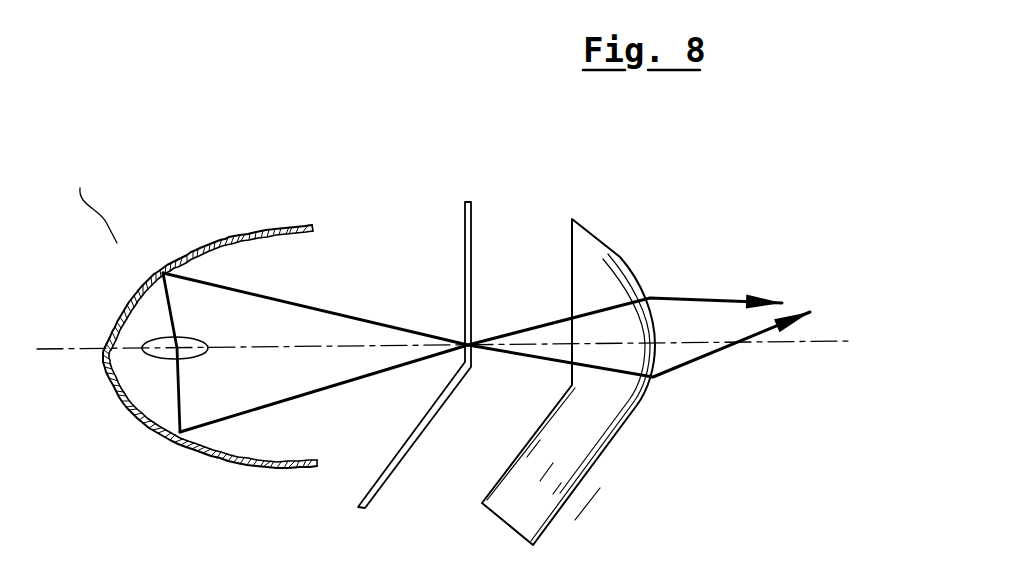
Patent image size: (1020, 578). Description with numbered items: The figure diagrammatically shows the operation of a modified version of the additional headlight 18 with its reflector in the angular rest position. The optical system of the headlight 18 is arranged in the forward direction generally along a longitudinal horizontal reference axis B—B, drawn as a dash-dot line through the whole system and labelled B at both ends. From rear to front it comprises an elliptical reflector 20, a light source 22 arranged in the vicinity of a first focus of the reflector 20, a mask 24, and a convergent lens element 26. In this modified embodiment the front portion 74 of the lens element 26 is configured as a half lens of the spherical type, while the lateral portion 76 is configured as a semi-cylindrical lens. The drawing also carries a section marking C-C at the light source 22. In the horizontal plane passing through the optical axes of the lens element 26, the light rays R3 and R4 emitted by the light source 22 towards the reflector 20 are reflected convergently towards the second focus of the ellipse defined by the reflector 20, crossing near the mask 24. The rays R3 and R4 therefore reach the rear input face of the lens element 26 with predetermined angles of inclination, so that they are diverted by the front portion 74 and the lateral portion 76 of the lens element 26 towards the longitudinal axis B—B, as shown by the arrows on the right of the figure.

The additional headlight 18 is at (91, 202).
The elliptical reflector 20 is at (242, 230).
The light source 22 is at (212, 335).
The mask 24 is at (468, 198).
The convergent lens element 26 is at (583, 203).
The front portion 74 is at (628, 256).
The lateral portion 76 is at (560, 517).
The light ray R3 is at (333, 310).
The light ray R4 is at (330, 393).
The longitudinal horizontal reference axis B is at (444, 328).
The section line C-C is at (173, 361).